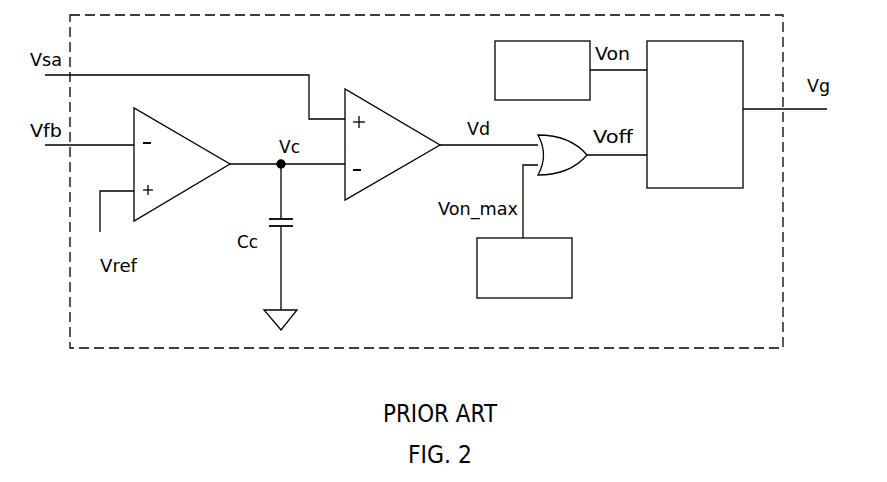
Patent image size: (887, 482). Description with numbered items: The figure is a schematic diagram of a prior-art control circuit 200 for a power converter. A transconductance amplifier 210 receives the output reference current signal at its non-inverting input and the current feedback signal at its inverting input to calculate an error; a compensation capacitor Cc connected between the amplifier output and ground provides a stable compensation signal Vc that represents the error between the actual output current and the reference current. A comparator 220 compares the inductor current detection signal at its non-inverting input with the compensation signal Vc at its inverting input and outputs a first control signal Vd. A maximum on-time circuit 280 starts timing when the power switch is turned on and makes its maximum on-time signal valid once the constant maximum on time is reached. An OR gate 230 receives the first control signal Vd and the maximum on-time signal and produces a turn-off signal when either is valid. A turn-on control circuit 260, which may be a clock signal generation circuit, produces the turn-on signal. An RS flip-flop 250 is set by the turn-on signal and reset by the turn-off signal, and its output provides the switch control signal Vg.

The control circuit 200 is at (740, 326).
The transconductance amplifier 210 is at (183, 136).
The comparator 220 is at (367, 102).
The OR gate 230 is at (578, 170).
The RS flip-flop 250 is at (710, 125).
The turn-on control circuit 260 is at (558, 80).
The maximum on-time circuit 280 is at (538, 276).